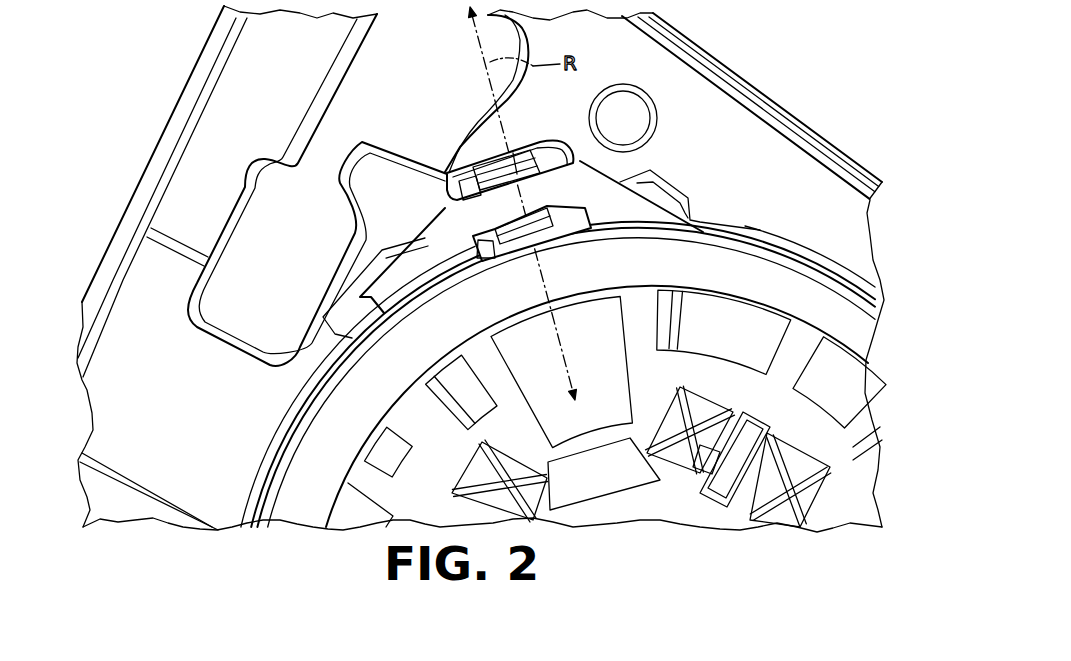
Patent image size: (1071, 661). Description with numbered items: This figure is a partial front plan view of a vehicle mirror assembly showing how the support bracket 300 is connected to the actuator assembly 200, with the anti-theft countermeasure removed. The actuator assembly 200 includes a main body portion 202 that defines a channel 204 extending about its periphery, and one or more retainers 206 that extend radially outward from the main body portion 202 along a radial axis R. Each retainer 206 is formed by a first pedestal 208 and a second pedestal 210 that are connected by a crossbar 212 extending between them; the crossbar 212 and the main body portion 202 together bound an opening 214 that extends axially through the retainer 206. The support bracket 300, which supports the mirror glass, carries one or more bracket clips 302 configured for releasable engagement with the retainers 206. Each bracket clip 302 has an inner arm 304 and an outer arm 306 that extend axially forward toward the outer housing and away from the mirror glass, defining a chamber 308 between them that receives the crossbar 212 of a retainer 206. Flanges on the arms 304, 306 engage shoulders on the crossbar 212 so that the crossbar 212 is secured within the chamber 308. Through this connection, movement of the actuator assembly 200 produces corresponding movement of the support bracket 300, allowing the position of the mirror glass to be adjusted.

The actuator assembly 200 is at (825, 214).
The main body portion 202 is at (810, 298).
The channel 204 is at (756, 247).
The retainer 206 is at (418, 226).
The first pedestal 208 is at (651, 213).
The second pedestal 210 is at (417, 280).
The crossbar 212 is at (587, 170).
The opening 214 is at (547, 197).
The support bracket 300 is at (768, 82).
The bracket clip 302 is at (552, 126).
The inner arm 304 is at (550, 236).
The outer arm 306 is at (489, 165).
The chamber 308 is at (497, 212).